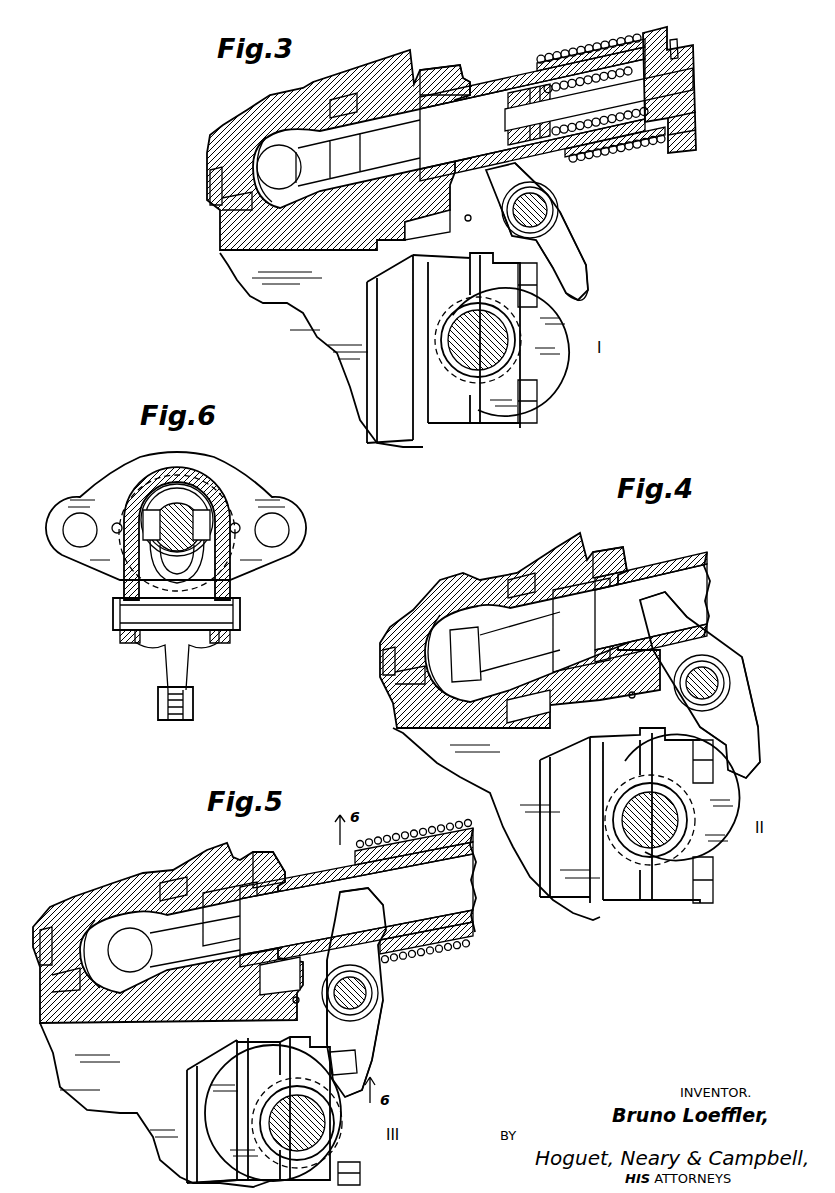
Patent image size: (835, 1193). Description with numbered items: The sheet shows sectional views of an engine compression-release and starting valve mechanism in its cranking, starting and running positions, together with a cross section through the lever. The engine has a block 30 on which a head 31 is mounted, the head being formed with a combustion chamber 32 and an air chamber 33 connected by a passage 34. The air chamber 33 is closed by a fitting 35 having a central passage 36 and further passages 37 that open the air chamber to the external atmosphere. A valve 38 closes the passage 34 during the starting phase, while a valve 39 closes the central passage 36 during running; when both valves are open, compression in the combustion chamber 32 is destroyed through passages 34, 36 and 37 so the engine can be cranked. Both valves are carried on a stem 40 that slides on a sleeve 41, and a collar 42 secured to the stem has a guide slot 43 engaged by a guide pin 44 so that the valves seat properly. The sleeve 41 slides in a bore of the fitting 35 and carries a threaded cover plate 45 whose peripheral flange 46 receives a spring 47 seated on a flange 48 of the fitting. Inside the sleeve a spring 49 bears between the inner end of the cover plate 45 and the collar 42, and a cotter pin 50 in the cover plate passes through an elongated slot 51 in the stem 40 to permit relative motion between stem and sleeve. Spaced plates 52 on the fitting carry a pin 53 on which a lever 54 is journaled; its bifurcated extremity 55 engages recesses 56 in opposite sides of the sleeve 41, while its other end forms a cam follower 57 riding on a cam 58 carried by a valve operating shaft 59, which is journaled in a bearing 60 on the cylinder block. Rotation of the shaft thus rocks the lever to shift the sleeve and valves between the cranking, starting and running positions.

In FIG. 3, the block 30 is at (290, 290).
In FIG. 4, the block 30 is at (480, 760).
In FIG. 5, the block 30 is at (130, 1103).
In FIG. 3, the head 31 is at (220, 133).
In FIG. 4, the head 31 is at (570, 547).
In FIG. 5, the head 31 is at (215, 855).
In FIG. 3, the combustion chamber 32 is at (223, 197).
In FIG. 4, the combustion chamber 32 is at (385, 665).
In FIG. 5, the combustion chamber 32 is at (50, 920).
In FIG. 3, the air chamber 33 is at (317, 150).
In FIG. 4, the air chamber 33 is at (485, 615).
In FIG. 5, the air chamber 33 is at (110, 940).
In FIG. 3, the passage 34 is at (247, 203).
In FIG. 4, the passage 34 is at (400, 680).
In FIG. 5, the passage 34 is at (78, 895).
In FIG. 3, the fitting 35 is at (437, 70).
In FIG. 6, the fitting 35 is at (135, 500).
In FIG. 4, the fitting 35 is at (613, 552).
In FIG. 5, the fitting 35 is at (265, 862).
In FIG. 3, the central passage 36 is at (350, 103).
In FIG. 4, the central passage 36 is at (522, 575).
In FIG. 5, the central passage 36 is at (170, 885).
In FIG. 3, the passages 37 is at (470, 221).
In FIG. 6, the passages 37 is at (112, 525).
In FIG. 4, the passages 37 is at (634, 698).
In FIG. 5, the passages 37 is at (297, 1004).
In FIG. 3, the valve 38 is at (260, 123).
In FIG. 4, the valve 38 is at (440, 615).
In FIG. 5, the valve 38 is at (117, 935).
In FIG. 3, the valve 39 is at (280, 150).
In FIG. 4, the valve 39 is at (447, 650).
In FIG. 5, the valve 39 is at (150, 940).
In FIG. 3, the stem 40 is at (420, 232).
In FIG. 6, the stem 40 is at (170, 500).
In FIG. 4, the stem 40 is at (505, 730).
In FIG. 5, the stem 40 is at (255, 1000).
In FIG. 3, the sleeve 41 is at (487, 87).
In FIG. 6, the sleeve 41 is at (185, 500).
In FIG. 4, the sleeve 41 is at (700, 590).
In FIG. 5, the sleeve 41 is at (470, 878).
In FIG. 3, the collar 42 is at (560, 170).
In FIG. 3, the guide slot 43 is at (540, 97).
In FIG. 3, the guide pin 44 is at (530, 93).
In FIG. 3, the cover plate 45 is at (690, 127).
In FIG. 3, the peripheral flange 46 is at (690, 145).
In FIG. 3, the spring 47 is at (623, 157).
In FIG. 5, the spring 47 is at (462, 940).
In FIG. 3, the flange 48 is at (545, 70).
In FIG. 5, the flange 48 is at (370, 845).
In FIG. 3, the spring 49 is at (603, 43).
In FIG. 3, the cotter pin 50 is at (673, 43).
In FIG. 3, the elongated slot 51 is at (693, 78).
In FIG. 3, the spaced plates 52 is at (562, 215).
In FIG. 6, the spaced plates 52 is at (128, 640).
In FIG. 4, the spaced plates 52 is at (730, 660).
In FIG. 5, the spaced plates 52 is at (378, 978).
In FIG. 3, the pin 53 is at (548, 212).
In FIG. 6, the pin 53 is at (222, 612).
In FIG. 4, the pin 53 is at (712, 683).
In FIG. 5, the pin 53 is at (364, 993).
In FIG. 3, the lever 54 is at (568, 258).
In FIG. 6, the lever 54 is at (180, 668).
In FIG. 4, the lever 54 is at (745, 713).
In FIG. 5, the lever 54 is at (373, 1030).
In FIG. 3, the bifurcated extremity 55 is at (560, 197).
In FIG. 6, the bifurcated extremity 55 is at (150, 560).
In FIG. 4, the bifurcated extremity 55 is at (690, 648).
In FIG. 5, the bifurcated extremity 55 is at (362, 955).
In FIG. 6, the recesses 56 is at (210, 490).
In FIG. 4, the recesses 56 is at (655, 590).
In FIG. 5, the recesses 56 is at (355, 880).
In FIG. 3, the cam follower 57 is at (582, 290).
In FIG. 6, the cam follower 57 is at (160, 702).
In FIG. 4, the cam follower 57 is at (752, 770).
In FIG. 5, the cam follower 57 is at (358, 1065).
In FIG. 3, the cam 58 is at (560, 375).
In FIG. 4, the cam 58 is at (735, 795).
In FIG. 5, the cam 58 is at (215, 1097).
In FIG. 3, the valve operating shaft 59 is at (478, 340).
In FIG. 4, the valve operating shaft 59 is at (650, 820).
In FIG. 5, the valve operating shaft 59 is at (320, 1130).
In FIG. 3, the bearing 60 is at (450, 410).
In FIG. 4, the bearing 60 is at (620, 900).
In FIG. 5, the bearing 60 is at (195, 1155).